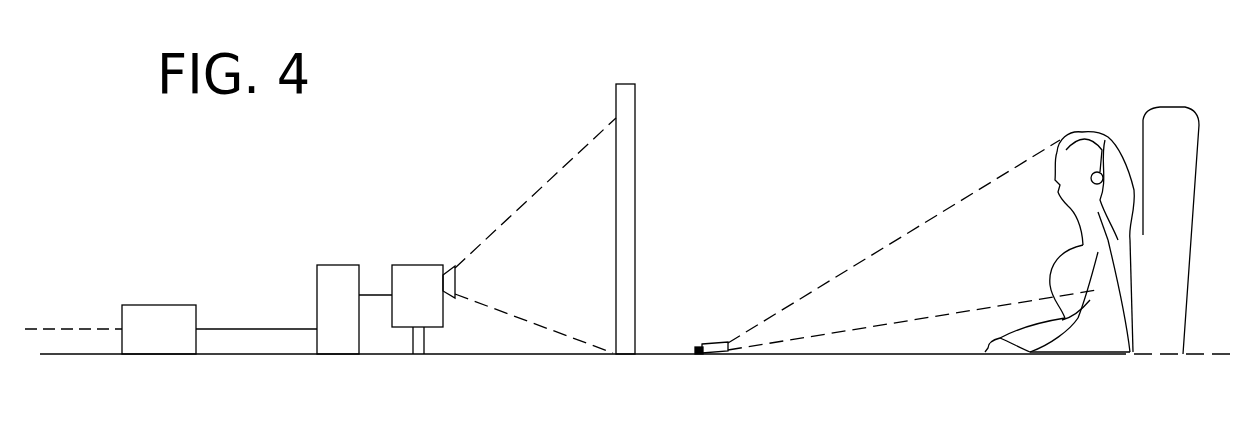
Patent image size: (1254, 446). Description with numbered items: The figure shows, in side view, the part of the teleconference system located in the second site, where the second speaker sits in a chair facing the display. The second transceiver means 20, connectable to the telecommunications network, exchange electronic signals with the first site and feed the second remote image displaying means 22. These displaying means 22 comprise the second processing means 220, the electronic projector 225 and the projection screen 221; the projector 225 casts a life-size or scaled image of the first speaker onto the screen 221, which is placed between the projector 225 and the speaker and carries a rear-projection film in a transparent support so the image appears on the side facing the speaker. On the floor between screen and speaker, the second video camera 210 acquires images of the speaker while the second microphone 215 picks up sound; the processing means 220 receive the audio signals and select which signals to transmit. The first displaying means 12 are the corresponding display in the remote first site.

The first remote image displaying means 12 is at (1105, 133).
The second transceiver means 20 is at (157, 308).
The second remote image displaying means 22 is at (536, 238).
The second processing means 220 is at (333, 347).
The electronic projector 225 is at (408, 283).
The projection screen 221 is at (628, 91).
The second video camera 210 is at (880, 274).
The second microphone 215 is at (700, 355).